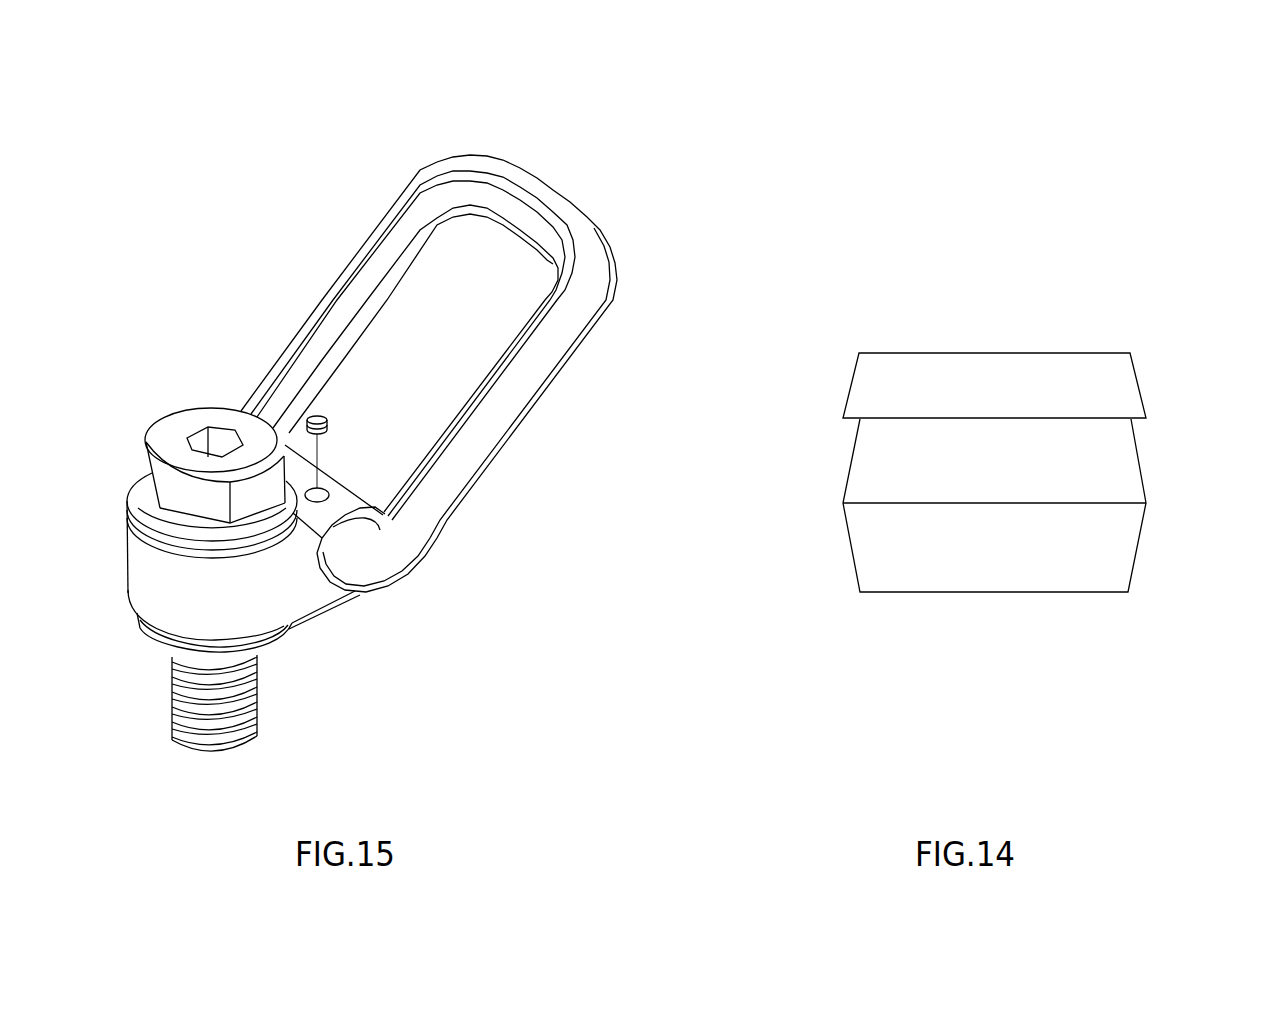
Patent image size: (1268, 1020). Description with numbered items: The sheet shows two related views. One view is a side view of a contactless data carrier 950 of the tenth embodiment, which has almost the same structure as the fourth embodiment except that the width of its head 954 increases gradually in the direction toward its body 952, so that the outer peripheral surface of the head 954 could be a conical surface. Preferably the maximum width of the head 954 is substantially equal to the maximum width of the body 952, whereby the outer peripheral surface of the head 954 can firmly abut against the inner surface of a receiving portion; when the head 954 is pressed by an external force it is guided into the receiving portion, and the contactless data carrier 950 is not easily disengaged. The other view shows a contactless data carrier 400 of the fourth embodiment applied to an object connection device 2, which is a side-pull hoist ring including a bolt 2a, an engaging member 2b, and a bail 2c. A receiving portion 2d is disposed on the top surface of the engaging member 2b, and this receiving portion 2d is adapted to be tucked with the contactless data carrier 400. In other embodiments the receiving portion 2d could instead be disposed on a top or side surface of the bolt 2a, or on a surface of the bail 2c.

In FIG. 15, the object connection device 2 is at (350, 225).
In FIG. 15, the bolt 2a is at (183, 423).
In FIG. 15, the engaging member 2b is at (147, 587).
In FIG. 15, the bail 2c is at (543, 204).
In FIG. 15, the receiving portion 2d is at (341, 488).
In FIG. 15, the contactless data carrier 400 is at (317, 414).
In FIG. 14, the contactless data carrier 950 is at (887, 340).
In FIG. 14, the body 952 is at (1146, 487).
In FIG. 14, the head 954 is at (1097, 385).